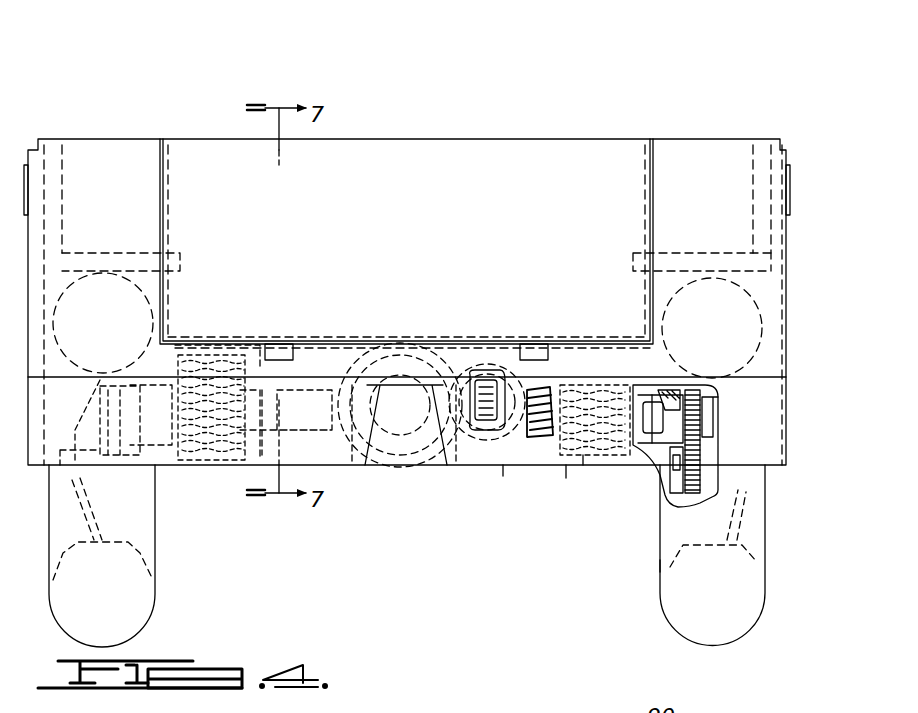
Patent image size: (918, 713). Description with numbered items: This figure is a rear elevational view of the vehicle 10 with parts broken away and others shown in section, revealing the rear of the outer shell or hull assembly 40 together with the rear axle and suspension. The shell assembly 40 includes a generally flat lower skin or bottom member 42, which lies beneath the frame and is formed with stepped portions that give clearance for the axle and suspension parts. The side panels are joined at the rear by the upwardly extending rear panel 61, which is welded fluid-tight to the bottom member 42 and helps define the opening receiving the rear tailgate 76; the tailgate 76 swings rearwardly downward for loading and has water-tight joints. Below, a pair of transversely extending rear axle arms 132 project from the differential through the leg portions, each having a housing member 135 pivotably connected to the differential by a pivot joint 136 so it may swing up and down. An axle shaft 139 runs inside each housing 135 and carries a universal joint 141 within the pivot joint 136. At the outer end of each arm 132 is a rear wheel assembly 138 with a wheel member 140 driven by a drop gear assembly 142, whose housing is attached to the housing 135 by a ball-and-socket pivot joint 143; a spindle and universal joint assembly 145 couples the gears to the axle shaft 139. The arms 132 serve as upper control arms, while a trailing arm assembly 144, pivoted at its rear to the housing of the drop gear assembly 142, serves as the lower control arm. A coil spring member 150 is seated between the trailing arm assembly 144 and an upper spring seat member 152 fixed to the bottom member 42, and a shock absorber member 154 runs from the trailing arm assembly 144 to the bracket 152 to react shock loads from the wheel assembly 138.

The vehicle 10 is at (706, 96).
The outer shell or hull assembly 40 is at (121, 162).
The rear tailgate 76 is at (497, 150).
The lower skin or bottom member 42 is at (503, 476).
The rear panel 61 is at (313, 345).
The rear axle arms 132 is at (541, 387).
The axle housing member 135 is at (520, 482).
The pivot joint 136 is at (500, 380).
The rear wheel assembly 138 is at (656, 565).
The axle shaft 139 is at (583, 457).
The wheel member 140 is at (142, 605).
The universal joint 141 is at (469, 392).
The drop gear assembly 142 is at (672, 481).
The pivot joint 143 is at (672, 483).
The trailing arm assembly 144 is at (568, 492).
The spindle and universal joint assembly 145 is at (660, 395).
The coil spring member 150 is at (186, 478).
The upper spring seat member 152 is at (185, 350).
The shock absorber member 154 is at (281, 445).